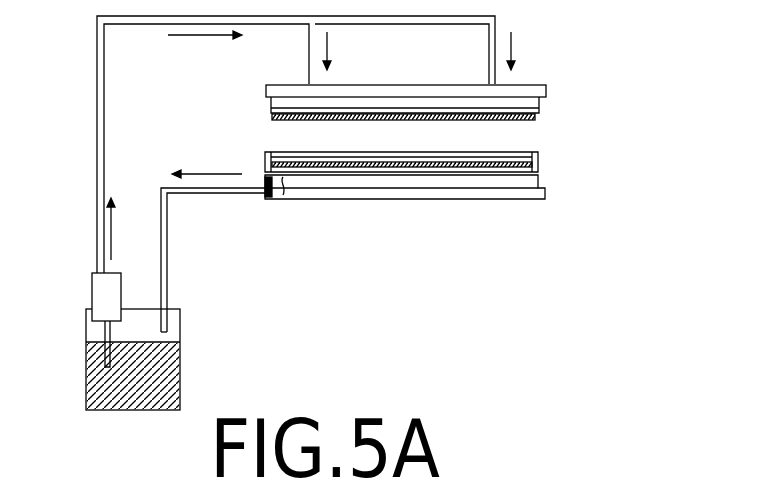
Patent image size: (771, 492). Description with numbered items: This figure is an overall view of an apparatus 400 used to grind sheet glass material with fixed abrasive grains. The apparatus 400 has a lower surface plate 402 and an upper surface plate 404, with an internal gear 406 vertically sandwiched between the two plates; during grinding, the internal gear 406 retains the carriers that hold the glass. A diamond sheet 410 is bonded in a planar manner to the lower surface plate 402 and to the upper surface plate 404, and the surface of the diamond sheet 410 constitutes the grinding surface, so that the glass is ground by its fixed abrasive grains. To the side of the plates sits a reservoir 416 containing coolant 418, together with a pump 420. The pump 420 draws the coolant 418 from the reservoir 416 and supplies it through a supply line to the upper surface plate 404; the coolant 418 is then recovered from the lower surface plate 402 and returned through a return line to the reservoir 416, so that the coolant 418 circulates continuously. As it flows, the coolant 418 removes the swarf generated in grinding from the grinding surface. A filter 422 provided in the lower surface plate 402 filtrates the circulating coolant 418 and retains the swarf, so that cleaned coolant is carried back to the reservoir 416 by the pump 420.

The apparatus 400 is at (552, 350).
The lower surface plate 402 is at (356, 176).
The upper surface plate 404 is at (268, 103).
The internal gear 406 is at (448, 168).
The diamond sheet 410 is at (532, 120).
The reservoir 416 is at (180, 325).
The coolant 418 is at (170, 385).
The pump 420 is at (92, 295).
The filter 422 is at (266, 198).